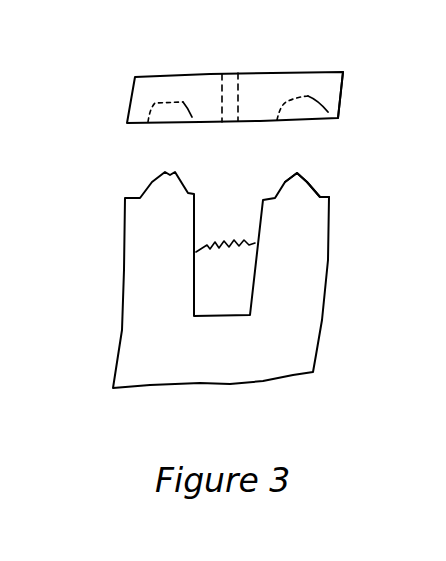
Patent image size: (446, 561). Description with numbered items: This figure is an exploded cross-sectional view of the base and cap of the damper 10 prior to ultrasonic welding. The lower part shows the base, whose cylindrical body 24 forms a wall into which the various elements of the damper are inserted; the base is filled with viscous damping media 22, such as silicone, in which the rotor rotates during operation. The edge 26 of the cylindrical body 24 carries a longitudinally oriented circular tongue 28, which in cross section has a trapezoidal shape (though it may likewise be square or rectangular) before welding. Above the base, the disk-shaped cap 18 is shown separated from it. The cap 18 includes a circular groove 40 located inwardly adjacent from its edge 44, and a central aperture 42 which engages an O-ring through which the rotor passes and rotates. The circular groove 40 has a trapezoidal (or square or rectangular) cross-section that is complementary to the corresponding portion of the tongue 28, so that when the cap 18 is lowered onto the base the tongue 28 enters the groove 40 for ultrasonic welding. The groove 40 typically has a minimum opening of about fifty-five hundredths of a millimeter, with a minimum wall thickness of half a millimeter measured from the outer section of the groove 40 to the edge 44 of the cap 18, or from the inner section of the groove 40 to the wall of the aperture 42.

The damper 10 is at (90, 275).
The cap 18 is at (295, 63).
The damping media 22 is at (240, 289).
The cylindrical body 24 is at (318, 267).
The edge 26 is at (323, 193).
The circular tongue 28 is at (312, 175).
The circular groove 40 is at (182, 127).
The central aperture 42 is at (233, 67).
The edge 44 is at (345, 93).